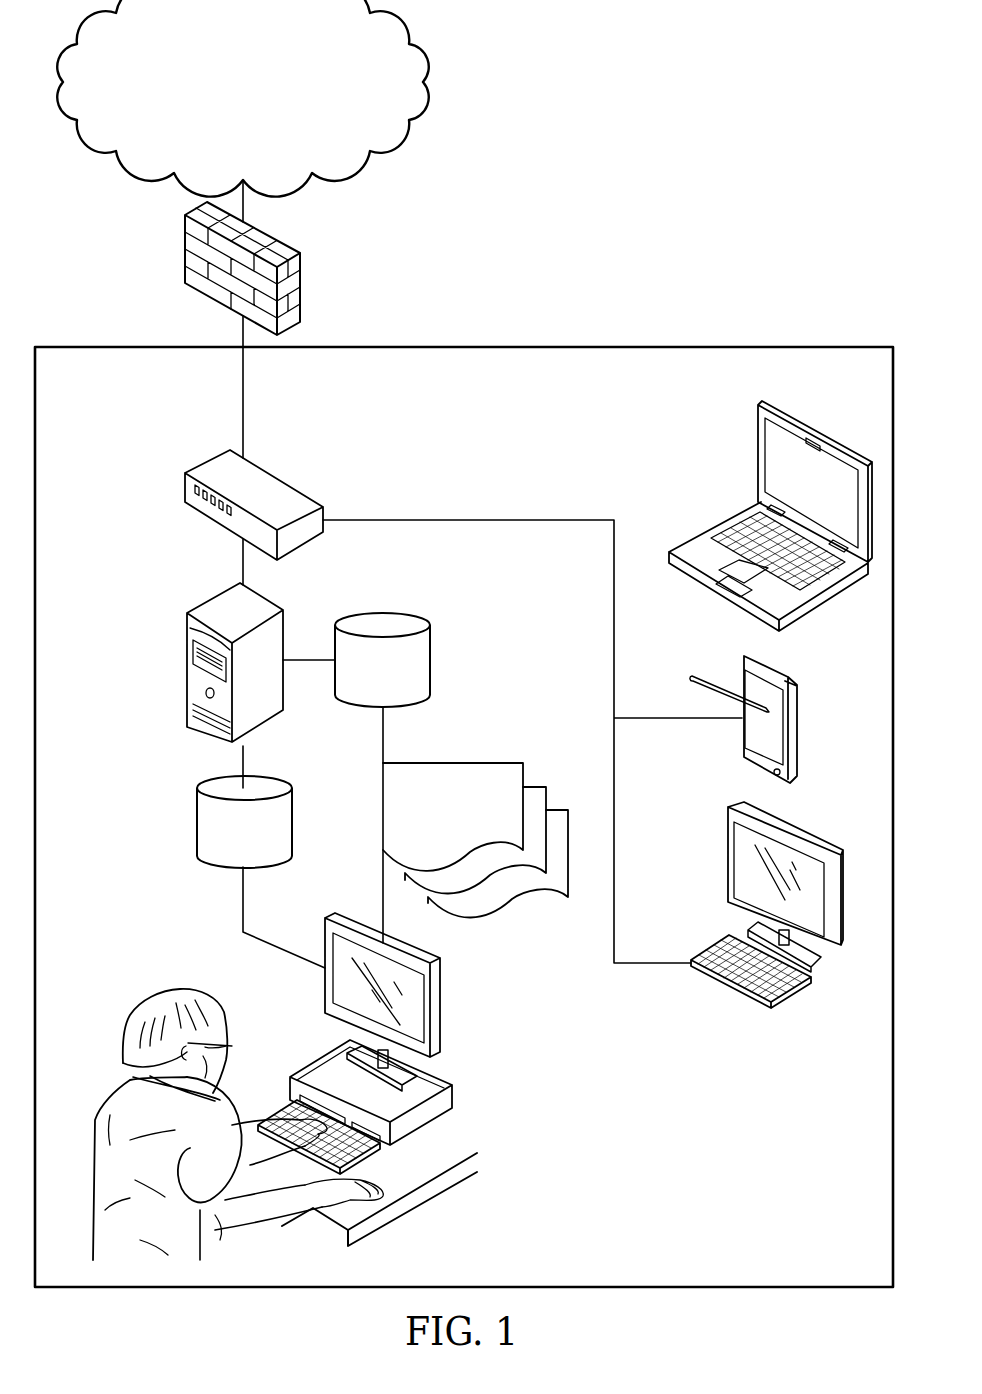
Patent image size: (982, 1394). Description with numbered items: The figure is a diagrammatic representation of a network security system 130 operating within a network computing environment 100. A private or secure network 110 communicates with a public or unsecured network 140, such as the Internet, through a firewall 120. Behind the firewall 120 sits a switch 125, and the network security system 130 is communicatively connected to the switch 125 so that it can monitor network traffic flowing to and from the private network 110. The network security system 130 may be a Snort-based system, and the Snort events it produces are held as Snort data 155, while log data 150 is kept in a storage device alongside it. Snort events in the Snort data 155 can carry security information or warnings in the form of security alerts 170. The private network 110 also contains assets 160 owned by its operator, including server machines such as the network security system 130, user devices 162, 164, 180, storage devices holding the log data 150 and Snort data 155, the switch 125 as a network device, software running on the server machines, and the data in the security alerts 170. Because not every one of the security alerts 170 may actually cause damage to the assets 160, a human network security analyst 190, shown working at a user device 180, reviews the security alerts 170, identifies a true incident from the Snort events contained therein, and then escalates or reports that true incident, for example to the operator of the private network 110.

The network computing environment 100 is at (686, 103).
The private or secure network 110 is at (441, 463).
The firewall 120 is at (301, 288).
The switch 125 is at (210, 462).
The network security system 130 is at (187, 650).
The public or unsecured network 140 is at (265, 142).
The log data 150 is at (196, 822).
The Snort data 155 is at (395, 613).
The assets 160 is at (755, 458).
The user device 162 is at (799, 742).
The user device 164 is at (727, 857).
The security alerts 170 is at (498, 905).
The user device 180 is at (442, 1020).
The network security analyst 190 is at (150, 1000).